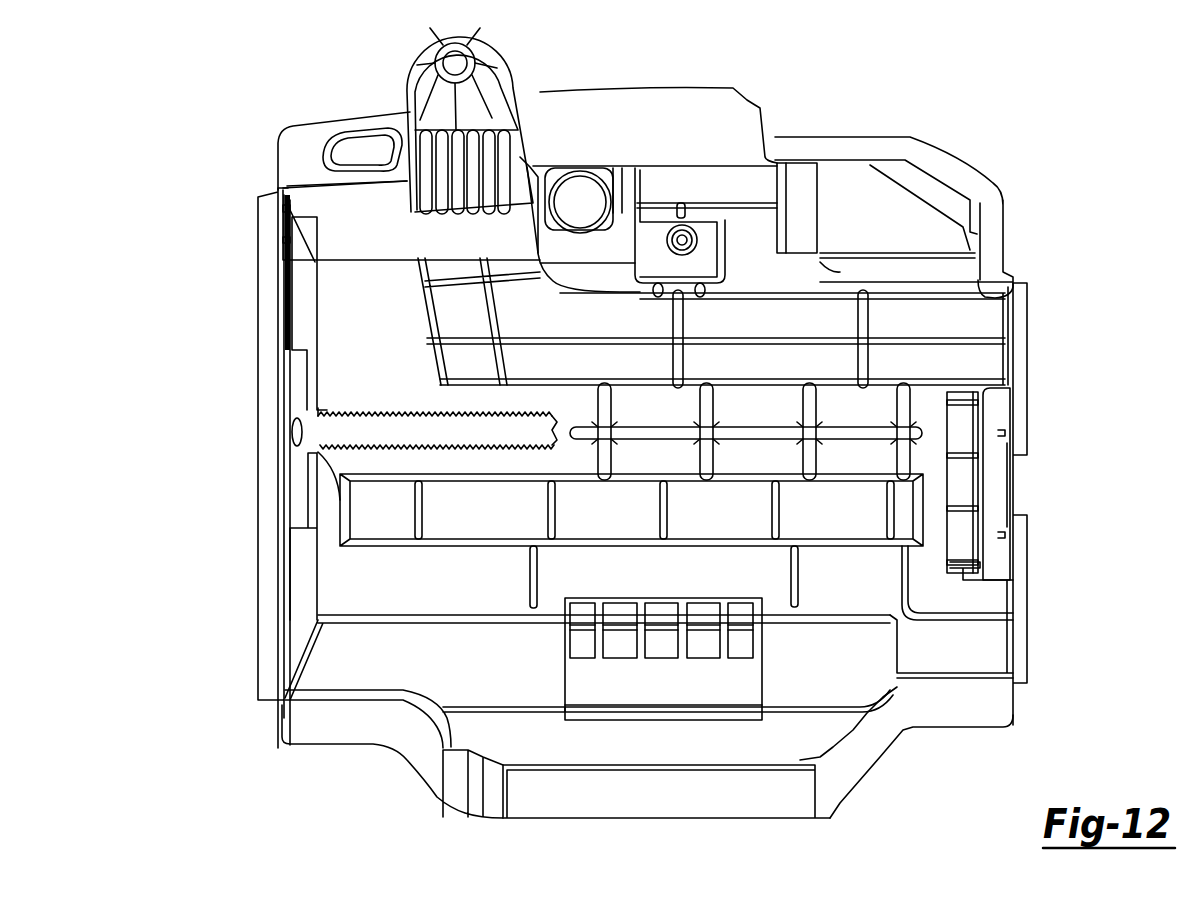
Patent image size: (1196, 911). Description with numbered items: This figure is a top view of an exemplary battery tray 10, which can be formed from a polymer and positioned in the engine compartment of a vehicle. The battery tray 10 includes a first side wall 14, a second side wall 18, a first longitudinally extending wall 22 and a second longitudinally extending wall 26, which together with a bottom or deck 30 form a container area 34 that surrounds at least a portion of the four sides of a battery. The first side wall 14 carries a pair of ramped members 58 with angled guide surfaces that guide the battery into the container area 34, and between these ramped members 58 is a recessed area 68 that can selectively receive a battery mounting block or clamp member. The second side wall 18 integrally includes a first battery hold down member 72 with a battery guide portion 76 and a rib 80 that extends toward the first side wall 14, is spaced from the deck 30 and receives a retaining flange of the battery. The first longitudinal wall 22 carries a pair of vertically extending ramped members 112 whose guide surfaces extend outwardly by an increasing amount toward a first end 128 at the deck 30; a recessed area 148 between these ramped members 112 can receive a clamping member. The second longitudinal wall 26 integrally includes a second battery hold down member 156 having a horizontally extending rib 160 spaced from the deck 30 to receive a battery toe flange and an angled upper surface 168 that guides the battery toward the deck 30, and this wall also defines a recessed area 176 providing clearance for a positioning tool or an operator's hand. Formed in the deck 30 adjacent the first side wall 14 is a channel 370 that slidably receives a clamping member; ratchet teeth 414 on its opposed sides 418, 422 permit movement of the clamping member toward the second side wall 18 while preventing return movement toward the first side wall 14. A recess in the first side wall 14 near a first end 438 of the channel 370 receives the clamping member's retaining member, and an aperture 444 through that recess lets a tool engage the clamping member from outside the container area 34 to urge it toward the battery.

The battery tray 10 is at (993, 113).
The first side wall 14 is at (300, 185).
The second side wall 18 is at (1010, 305).
The first longitudinally extending wall 22 is at (775, 158).
The second longitudinally extending wall 26 is at (867, 723).
The deck 30 is at (371, 335).
The container area 34 is at (360, 610).
The ramped members 58 is at (317, 255).
The recessed area 68 is at (292, 364).
The first battery hold down member 72 is at (950, 588).
The battery guide portion 76 is at (980, 468).
The rib 80 is at (944, 418).
The ramped members 112 is at (392, 205).
The first end 128 is at (382, 262).
The recessed area 148 is at (655, 185).
The second battery hold down member 156 is at (778, 647).
The rib 160 is at (590, 597).
The angled upper surface 168 is at (650, 707).
The recessed area 176 is at (485, 735).
The channel 370 is at (484, 465).
The ratchet teeth 414 is at (500, 398).
The side 418 is at (427, 410).
The side 422 is at (520, 452).
The first end 438 is at (372, 510).
The aperture 444 is at (300, 430).